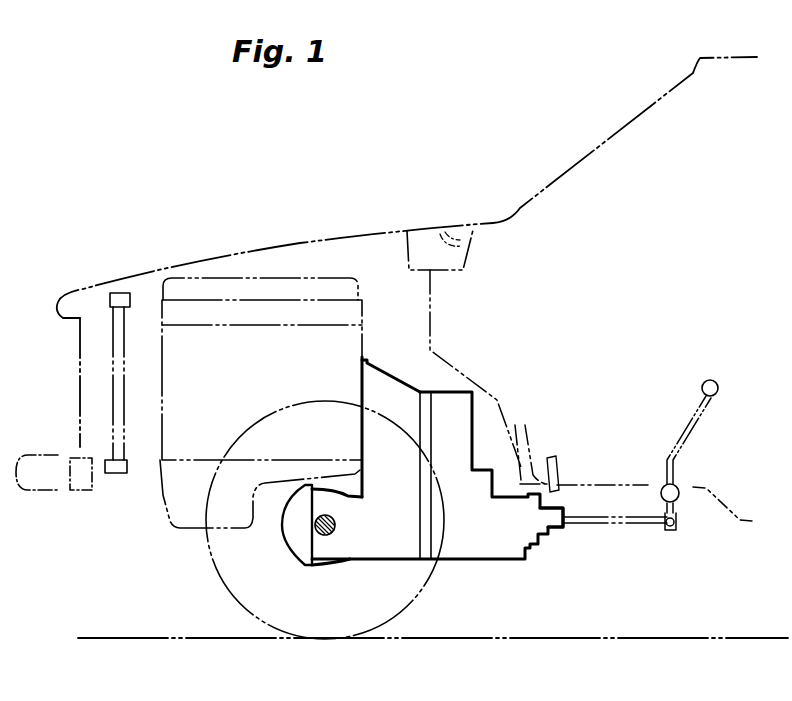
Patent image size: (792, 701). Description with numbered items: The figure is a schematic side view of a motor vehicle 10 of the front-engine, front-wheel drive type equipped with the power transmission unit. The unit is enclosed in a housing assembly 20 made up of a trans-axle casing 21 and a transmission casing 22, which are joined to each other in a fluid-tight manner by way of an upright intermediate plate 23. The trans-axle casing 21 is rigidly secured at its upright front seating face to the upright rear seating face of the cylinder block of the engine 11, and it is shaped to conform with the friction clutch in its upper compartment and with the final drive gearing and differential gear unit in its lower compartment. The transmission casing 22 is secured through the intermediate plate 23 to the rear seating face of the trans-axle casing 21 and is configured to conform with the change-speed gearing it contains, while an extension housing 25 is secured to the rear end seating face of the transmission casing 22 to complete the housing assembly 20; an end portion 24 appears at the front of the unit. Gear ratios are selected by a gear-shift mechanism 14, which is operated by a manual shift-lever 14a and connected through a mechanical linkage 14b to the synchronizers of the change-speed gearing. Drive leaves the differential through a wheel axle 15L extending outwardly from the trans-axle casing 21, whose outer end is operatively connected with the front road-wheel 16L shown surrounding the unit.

The motor vehicle 10 is at (382, 258).
The engine 11 is at (256, 382).
The gear-shift mechanism 14 is at (669, 473).
The manual shift-lever 14a is at (672, 446).
The mechanical linkage 14b is at (620, 522).
The wheel axle 15L is at (335, 519).
The front road-wheel 16L is at (205, 562).
The housing assembly 20 is at (412, 472).
The trans-axle casing 21 is at (390, 383).
The transmission casing 22 is at (468, 549).
The intermediate plate 23 is at (425, 562).
The end cap 24 is at (292, 532).
The extension housing 25 is at (553, 524).